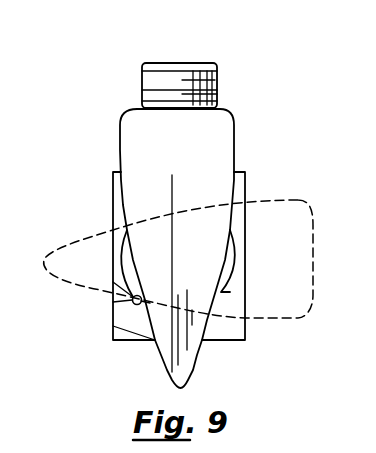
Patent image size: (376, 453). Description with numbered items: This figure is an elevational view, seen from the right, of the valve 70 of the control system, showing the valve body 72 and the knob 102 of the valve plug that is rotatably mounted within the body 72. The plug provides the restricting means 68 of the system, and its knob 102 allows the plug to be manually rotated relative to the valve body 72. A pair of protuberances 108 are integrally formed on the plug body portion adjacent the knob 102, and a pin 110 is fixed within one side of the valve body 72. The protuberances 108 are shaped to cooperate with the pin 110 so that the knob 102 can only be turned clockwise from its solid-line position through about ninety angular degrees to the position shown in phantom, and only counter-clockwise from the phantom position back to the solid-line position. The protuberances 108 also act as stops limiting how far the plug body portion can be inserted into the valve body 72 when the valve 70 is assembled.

The restricting means 68 is at (302, 72).
The valve 70 is at (282, 137).
The valve body 72 is at (113, 203).
The knob 102 is at (232, 110).
The protuberances 108 is at (233, 252).
The pin 110 is at (133, 303).